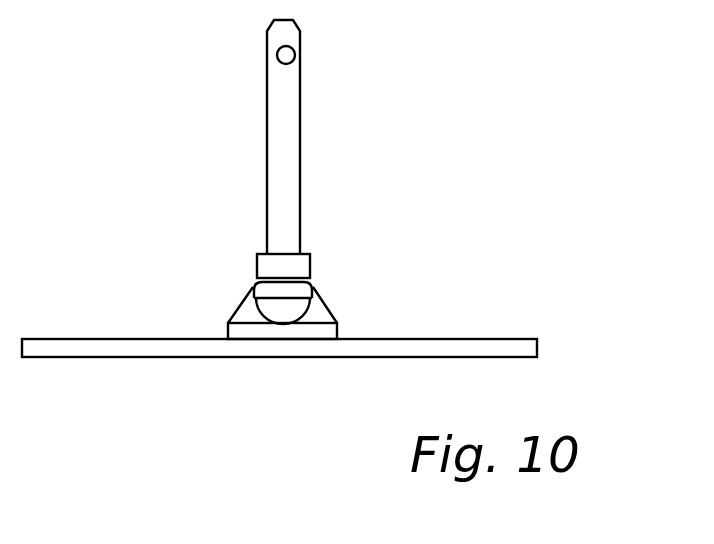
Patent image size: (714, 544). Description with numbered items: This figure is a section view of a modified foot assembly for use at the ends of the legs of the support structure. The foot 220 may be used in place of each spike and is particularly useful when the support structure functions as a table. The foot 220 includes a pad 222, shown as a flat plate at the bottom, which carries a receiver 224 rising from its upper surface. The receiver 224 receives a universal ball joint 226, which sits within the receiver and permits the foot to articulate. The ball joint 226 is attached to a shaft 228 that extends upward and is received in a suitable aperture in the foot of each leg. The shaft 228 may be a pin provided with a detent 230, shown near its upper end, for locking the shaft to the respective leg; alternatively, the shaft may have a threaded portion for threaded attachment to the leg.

The foot 220 is at (468, 288).
The pad 222 is at (405, 357).
The receiver 224 is at (250, 314).
The universal ball joint 226 is at (308, 312).
The shaft 228 is at (301, 108).
The detent 230 is at (286, 55).